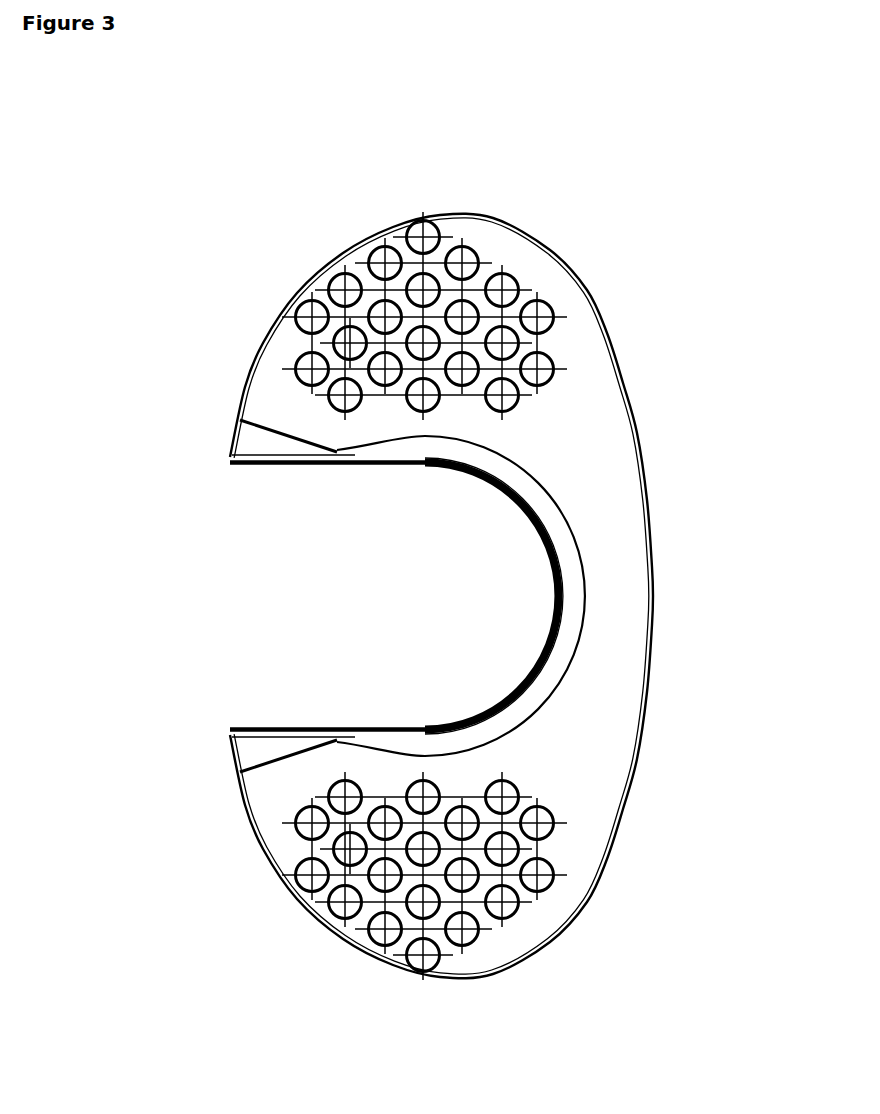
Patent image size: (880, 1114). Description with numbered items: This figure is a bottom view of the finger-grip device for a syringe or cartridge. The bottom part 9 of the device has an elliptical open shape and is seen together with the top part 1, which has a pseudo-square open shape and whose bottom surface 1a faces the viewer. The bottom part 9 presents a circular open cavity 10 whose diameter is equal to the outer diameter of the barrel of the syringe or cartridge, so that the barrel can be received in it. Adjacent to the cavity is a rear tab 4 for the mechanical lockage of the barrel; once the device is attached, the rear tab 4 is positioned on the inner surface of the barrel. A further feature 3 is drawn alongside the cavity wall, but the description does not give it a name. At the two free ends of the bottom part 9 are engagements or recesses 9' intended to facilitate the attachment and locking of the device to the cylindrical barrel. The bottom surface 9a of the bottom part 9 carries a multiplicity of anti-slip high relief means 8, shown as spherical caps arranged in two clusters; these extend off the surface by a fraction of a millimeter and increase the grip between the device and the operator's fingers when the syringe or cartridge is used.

The top part of the device 1 is at (260, 466).
The bottom surface of the top part 1a is at (250, 757).
The channel wall layer 3 is at (543, 548).
The rear tab 4 is at (523, 515).
The anti-slip high relief means 8 is at (430, 224).
The bottom part of the device 9 is at (495, 596).
The engagements or recesses 9' is at (253, 574).
The bottom surface of the bottom part 9a is at (441, 596).
The circular open cavity 10 is at (573, 548).